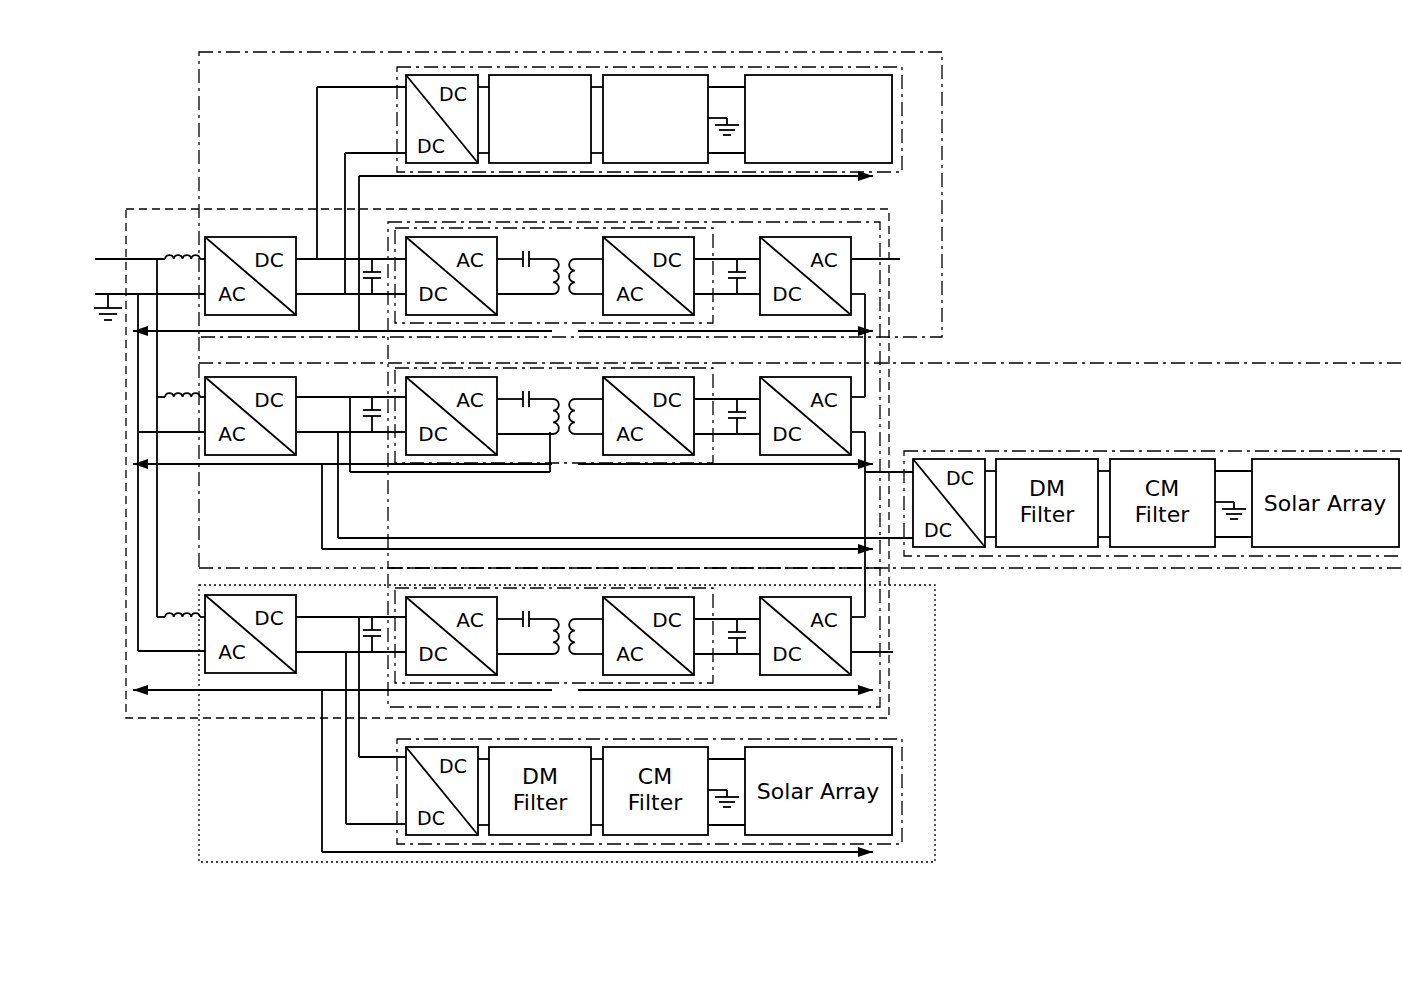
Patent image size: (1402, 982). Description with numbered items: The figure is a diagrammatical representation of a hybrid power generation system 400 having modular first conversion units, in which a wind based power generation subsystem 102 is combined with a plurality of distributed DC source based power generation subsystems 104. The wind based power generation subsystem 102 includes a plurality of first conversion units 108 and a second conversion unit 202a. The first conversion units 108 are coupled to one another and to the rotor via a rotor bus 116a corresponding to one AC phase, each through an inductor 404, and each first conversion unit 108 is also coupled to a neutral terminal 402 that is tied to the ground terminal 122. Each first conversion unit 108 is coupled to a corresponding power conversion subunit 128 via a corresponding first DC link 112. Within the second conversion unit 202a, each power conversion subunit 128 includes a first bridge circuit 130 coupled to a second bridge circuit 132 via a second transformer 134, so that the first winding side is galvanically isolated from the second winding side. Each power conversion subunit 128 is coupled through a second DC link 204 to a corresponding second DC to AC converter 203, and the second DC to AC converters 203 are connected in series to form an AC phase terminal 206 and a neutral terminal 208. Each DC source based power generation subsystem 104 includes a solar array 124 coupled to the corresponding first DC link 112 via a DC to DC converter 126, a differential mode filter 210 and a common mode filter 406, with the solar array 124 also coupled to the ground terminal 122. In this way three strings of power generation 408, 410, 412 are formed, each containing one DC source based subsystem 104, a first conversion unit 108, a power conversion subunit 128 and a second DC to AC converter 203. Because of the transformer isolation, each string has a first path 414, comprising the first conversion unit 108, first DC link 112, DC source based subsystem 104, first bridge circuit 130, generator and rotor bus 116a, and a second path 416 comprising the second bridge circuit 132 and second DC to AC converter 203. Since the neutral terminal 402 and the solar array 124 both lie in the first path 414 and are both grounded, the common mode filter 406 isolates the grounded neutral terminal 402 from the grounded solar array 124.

The hybrid power generation system 400 is at (1250, 72).
The wind based power generation subsystem 102 is at (140, 209).
The DC source based power generation subsystem 104 is at (884, 67).
The first conversion unit 108 is at (232, 595).
The first DC link 112 is at (372, 283).
The rotor bus 116a is at (105, 259).
The ground terminal 122 is at (108, 324).
The solar array 124 is at (804, 75).
The DC to DC converter 126 is at (438, 75).
The power conversion subunit 128 is at (488, 325).
The first bridge circuit 130 is at (442, 237).
The second bridge circuit 132 is at (643, 237).
The second transformer 134 is at (565, 252).
The second conversion unit 202a is at (880, 238).
The second DC to AC converter 203 is at (805, 237).
The second DC link 204 is at (738, 298).
The AC phase terminal 206 is at (884, 264).
The neutral terminal 208 is at (897, 648).
The differential mode filter 210 is at (540, 75).
The neutral terminal 402 is at (100, 298).
The inductor 404 is at (178, 259).
The common mode filter 406 is at (652, 75).
The string of power generation 408 is at (943, 193).
The string of power generation 410 is at (1172, 363).
The string of power generation 412 is at (199, 802).
The first path 414 is at (255, 466).
The second path 416 is at (745, 466).